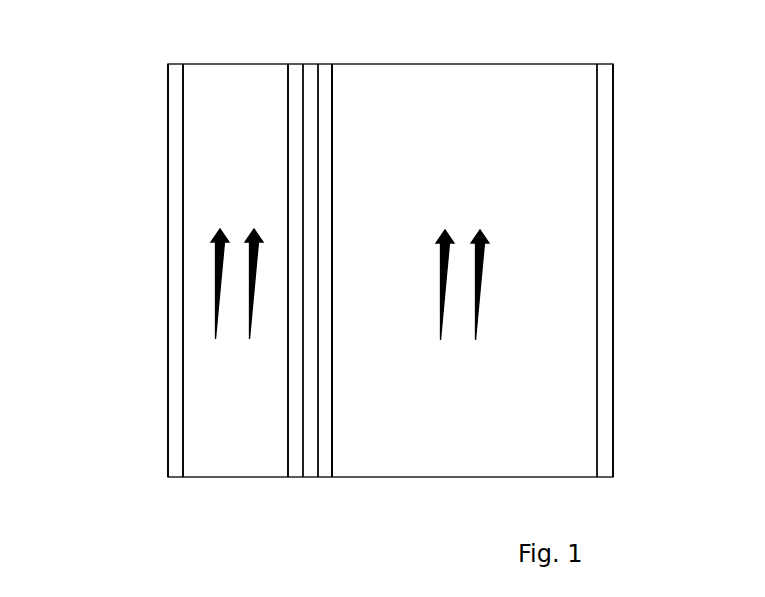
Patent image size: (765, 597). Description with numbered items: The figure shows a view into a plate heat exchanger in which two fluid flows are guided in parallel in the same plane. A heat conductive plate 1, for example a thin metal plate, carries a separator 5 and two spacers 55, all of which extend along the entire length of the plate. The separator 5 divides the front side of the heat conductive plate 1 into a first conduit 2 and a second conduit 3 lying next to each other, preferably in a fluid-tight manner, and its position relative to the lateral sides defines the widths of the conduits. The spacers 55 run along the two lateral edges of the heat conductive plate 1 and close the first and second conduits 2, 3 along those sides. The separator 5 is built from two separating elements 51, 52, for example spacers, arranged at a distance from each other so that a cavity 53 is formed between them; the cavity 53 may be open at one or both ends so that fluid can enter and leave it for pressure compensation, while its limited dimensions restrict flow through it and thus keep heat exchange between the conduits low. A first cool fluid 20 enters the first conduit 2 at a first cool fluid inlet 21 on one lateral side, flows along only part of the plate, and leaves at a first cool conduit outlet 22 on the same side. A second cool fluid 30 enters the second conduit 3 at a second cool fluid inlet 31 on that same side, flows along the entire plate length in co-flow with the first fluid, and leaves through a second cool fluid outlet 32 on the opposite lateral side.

The heat conductive plate 1 is at (390, 80).
The first conduit 2 is at (228, 150).
The second conduit 3 is at (523, 188).
The separator 5 is at (312, 55).
The first fluid 20 is at (215, 290).
The first cool fluid inlet 21 is at (202, 477).
The first cool conduit outlet 22 is at (212, 65).
The second fluid 30 is at (483, 292).
The second cool fluid inlet 31 is at (383, 477).
The second cool fluid outlet 32 is at (553, 63).
The separating element 51 is at (292, 477).
The separating element 52 is at (325, 477).
The cavity 53 is at (309, 477).
The spacers 55 is at (174, 430).